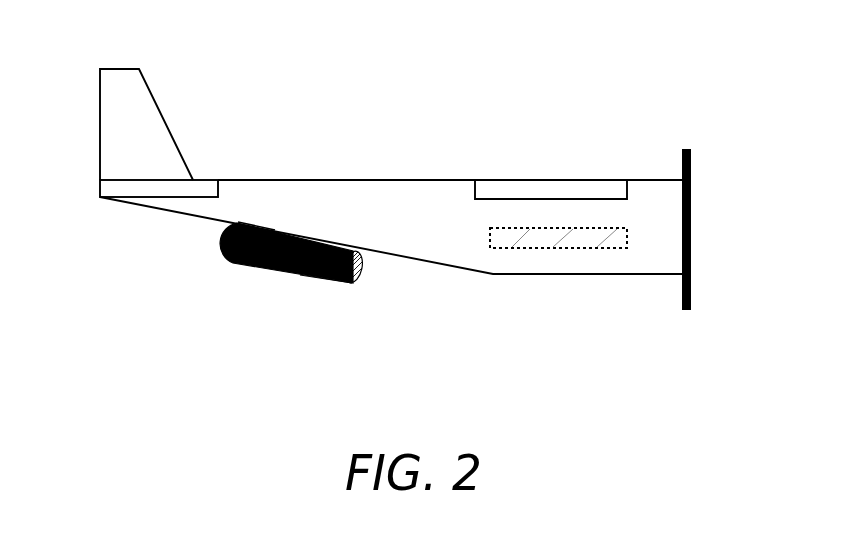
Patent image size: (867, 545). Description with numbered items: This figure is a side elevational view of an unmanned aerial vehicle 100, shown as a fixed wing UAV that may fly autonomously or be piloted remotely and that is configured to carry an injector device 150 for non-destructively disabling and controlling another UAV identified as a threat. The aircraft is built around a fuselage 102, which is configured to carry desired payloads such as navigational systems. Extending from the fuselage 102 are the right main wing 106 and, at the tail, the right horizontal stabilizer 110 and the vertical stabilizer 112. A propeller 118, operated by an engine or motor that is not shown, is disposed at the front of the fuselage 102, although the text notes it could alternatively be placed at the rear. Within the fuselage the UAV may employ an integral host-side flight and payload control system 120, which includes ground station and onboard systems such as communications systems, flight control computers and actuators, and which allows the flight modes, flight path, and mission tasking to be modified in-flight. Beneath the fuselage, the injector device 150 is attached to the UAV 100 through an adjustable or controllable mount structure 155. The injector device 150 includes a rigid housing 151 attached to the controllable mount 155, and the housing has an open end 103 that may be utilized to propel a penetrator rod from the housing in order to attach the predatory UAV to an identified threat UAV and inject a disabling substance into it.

The unmanned aerial vehicle 100 is at (383, 68).
The fuselage 102 is at (320, 179).
The open end 103 is at (352, 282).
The right main wing 106 is at (524, 190).
The right horizontal stabilizer 110 is at (159, 198).
The vertical stabilizer 112 is at (165, 121).
The propeller 118 is at (691, 197).
The host-side flight and payload control system 120 is at (491, 238).
The injector device 150 is at (303, 286).
The rigid housing 151 is at (327, 280).
The mount structure 155 is at (230, 225).